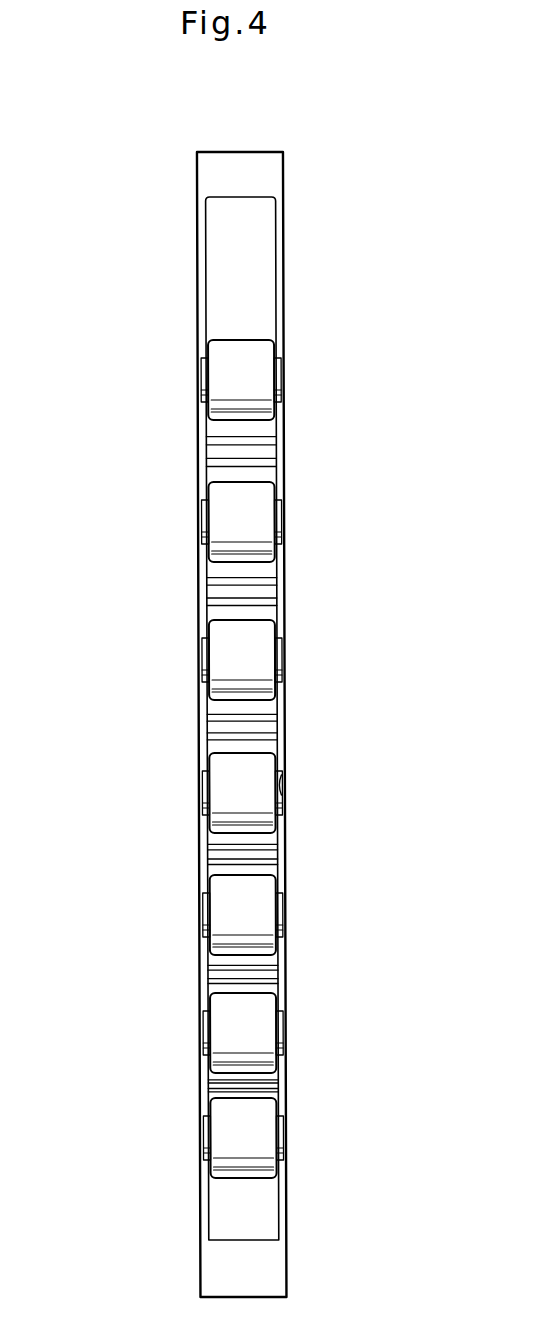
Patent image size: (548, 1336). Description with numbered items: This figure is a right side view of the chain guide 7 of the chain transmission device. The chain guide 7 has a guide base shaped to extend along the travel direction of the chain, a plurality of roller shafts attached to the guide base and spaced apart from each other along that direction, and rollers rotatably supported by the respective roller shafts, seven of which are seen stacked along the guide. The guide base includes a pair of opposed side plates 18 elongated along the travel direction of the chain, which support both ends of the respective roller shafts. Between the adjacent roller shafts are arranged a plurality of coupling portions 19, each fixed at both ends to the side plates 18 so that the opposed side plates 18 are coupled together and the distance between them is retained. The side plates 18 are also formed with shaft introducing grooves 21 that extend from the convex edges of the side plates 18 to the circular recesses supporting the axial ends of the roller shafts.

The chain guide 7 is at (196, 180).
The side plate 18 is at (203, 290).
The coupling portion 19 is at (268, 725).
The shaft introducing groove 21 is at (285, 778).